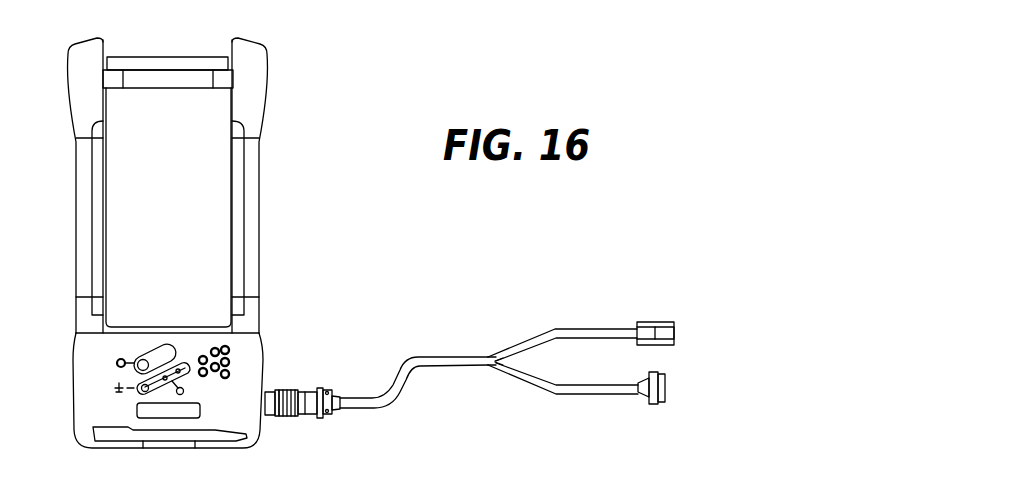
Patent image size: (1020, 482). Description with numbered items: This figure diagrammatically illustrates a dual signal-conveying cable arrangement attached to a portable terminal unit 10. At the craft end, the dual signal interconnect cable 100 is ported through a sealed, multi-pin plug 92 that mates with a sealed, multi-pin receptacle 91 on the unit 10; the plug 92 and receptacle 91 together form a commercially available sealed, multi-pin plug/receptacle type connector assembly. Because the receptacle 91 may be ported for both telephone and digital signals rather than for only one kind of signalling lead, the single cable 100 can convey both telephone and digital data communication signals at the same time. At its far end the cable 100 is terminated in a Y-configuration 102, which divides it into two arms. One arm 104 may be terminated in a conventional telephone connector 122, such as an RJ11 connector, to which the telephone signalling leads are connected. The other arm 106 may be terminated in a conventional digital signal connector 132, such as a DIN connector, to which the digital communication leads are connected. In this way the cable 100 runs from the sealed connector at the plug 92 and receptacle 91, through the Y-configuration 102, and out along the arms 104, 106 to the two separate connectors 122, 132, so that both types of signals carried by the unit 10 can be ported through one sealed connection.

The portable data collection terminal 10 is at (280, 136).
The sealed multi-pin receptacle 91 is at (270, 392).
The sealed multi-pin plug 92 is at (325, 388).
The dual signal interconnect cable 100 is at (382, 378).
The Y-configuration 102 is at (483, 338).
The arm 104 is at (537, 335).
The arm 106 is at (520, 382).
The telephone connector 122 is at (650, 322).
The digital signal connector 132 is at (665, 385).